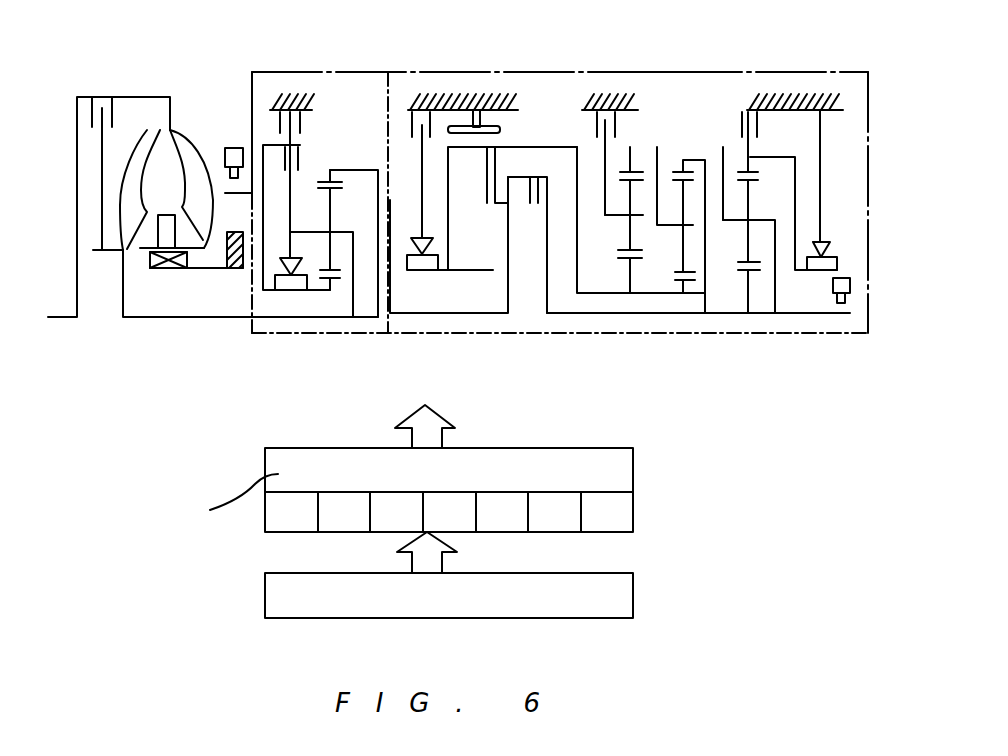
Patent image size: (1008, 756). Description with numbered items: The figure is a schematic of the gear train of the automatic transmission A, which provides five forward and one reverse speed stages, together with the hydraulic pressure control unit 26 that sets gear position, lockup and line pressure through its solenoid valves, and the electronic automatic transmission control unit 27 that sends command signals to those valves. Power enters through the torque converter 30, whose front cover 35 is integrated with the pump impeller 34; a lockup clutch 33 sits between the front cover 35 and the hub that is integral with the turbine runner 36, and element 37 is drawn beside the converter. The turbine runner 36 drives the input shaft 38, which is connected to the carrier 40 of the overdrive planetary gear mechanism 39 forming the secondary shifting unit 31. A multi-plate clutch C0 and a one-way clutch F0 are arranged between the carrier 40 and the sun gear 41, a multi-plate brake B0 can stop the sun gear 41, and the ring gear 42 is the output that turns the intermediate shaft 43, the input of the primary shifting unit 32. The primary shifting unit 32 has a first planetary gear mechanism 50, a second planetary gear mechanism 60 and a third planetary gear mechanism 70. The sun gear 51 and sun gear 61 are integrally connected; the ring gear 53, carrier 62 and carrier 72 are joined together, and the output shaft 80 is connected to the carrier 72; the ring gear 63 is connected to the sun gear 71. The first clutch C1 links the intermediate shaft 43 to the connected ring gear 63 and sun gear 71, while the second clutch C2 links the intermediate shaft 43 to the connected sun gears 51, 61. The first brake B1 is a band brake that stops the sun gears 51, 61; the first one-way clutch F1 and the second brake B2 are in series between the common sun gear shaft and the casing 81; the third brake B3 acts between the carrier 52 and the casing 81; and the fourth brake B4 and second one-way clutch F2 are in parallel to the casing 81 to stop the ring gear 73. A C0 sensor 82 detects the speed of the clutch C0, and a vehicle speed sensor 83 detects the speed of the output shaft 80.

The automatic transmission A is at (536, 67).
The torque converter 30 is at (182, 86).
The lockup clutch 33 is at (91, 108).
The front cover 35 is at (77, 161).
The turbine runner 36 is at (147, 130).
The stator shaft 37 is at (110, 252).
The input shaft 38 is at (173, 318).
The pump impeller 34 is at (203, 242).
The C0 sensor 82 is at (227, 147).
The secondary shifting unit 31 is at (360, 333).
The primary shifting unit 32 is at (657, 72).
The multi-plate brake B0 is at (279, 121).
The multi-plate clutch C0 is at (275, 150).
The one-way clutch F0 is at (282, 284).
The overdrive planetary gear mechanism 39 is at (317, 297).
The carrier 40 is at (341, 232).
The sun gear 41 is at (333, 283).
The ring gear 42 is at (325, 178).
The intermediate shaft 43 is at (473, 313).
The casing 81 is at (452, 96).
The first brake B1 is at (495, 112).
The second brake B2 is at (412, 122).
The third brake B3 is at (597, 125).
The fourth brake B4 is at (757, 100).
The first clutch C1 is at (545, 190).
The second clutch C2 is at (485, 160).
The first one-way clutch F1 is at (420, 263).
The second one-way clutch F2 is at (828, 262).
The first planetary gear mechanism 50 is at (622, 297).
The sun gear 51 is at (627, 260).
The carrier 52 is at (615, 215).
The ring gear 53 is at (638, 170).
The second planetary gear mechanism 60 is at (687, 297).
The sun gear 61 is at (675, 278).
The carrier 62 is at (675, 227).
The ring gear 63 is at (675, 170).
The third planetary gear mechanism 70 is at (758, 307).
The sun gear 71 is at (740, 266).
The carrier 72 is at (770, 212).
The ring gear 73 is at (745, 170).
The output shaft 80 is at (830, 313).
The vehicle speed sensor 83 is at (850, 282).
The hydraulic pressure control unit 26 is at (623, 467).
The electronic automatic transmission control unit 27 is at (627, 595).